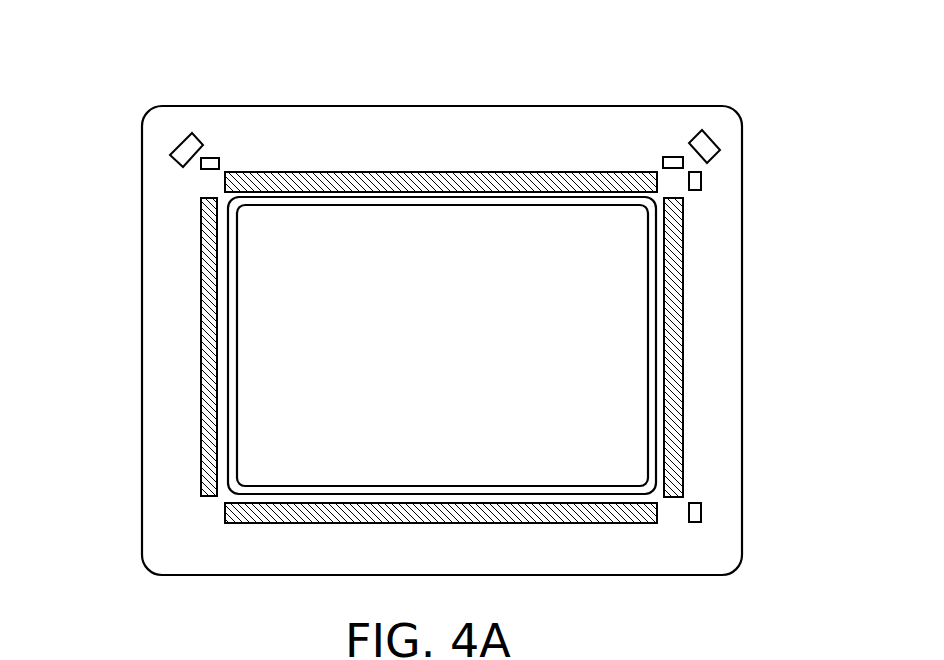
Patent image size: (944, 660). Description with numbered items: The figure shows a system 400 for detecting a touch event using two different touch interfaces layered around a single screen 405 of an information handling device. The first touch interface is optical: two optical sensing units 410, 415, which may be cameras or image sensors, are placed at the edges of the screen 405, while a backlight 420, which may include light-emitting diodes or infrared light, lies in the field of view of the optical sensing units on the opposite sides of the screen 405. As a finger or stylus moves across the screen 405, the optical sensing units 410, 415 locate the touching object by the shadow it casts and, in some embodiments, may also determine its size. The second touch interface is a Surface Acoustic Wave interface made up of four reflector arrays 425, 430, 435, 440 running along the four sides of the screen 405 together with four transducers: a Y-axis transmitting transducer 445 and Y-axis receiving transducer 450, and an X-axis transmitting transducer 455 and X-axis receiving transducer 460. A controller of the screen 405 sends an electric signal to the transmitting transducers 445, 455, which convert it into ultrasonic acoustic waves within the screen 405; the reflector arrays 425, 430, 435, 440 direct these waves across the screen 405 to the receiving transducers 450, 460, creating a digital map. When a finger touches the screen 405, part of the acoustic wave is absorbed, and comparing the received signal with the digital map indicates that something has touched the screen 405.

The system 400 is at (86, 81).
The screen 405 is at (237, 440).
The optical sensing unit 410 is at (172, 153).
The optical sensing unit 415 is at (720, 152).
The backlight 420 is at (229, 357).
The reflector array 425 is at (273, 172).
The reflector array 430 is at (683, 335).
The reflector array 435 is at (553, 523).
The reflector array 440 is at (200, 293).
The Y-axis transmitting transducer 445 is at (200, 169).
The Y-axis receiving transducer 450 is at (670, 157).
The X-axis transmitting transducer 455 is at (701, 190).
The X-axis receiving transducer 460 is at (702, 522).